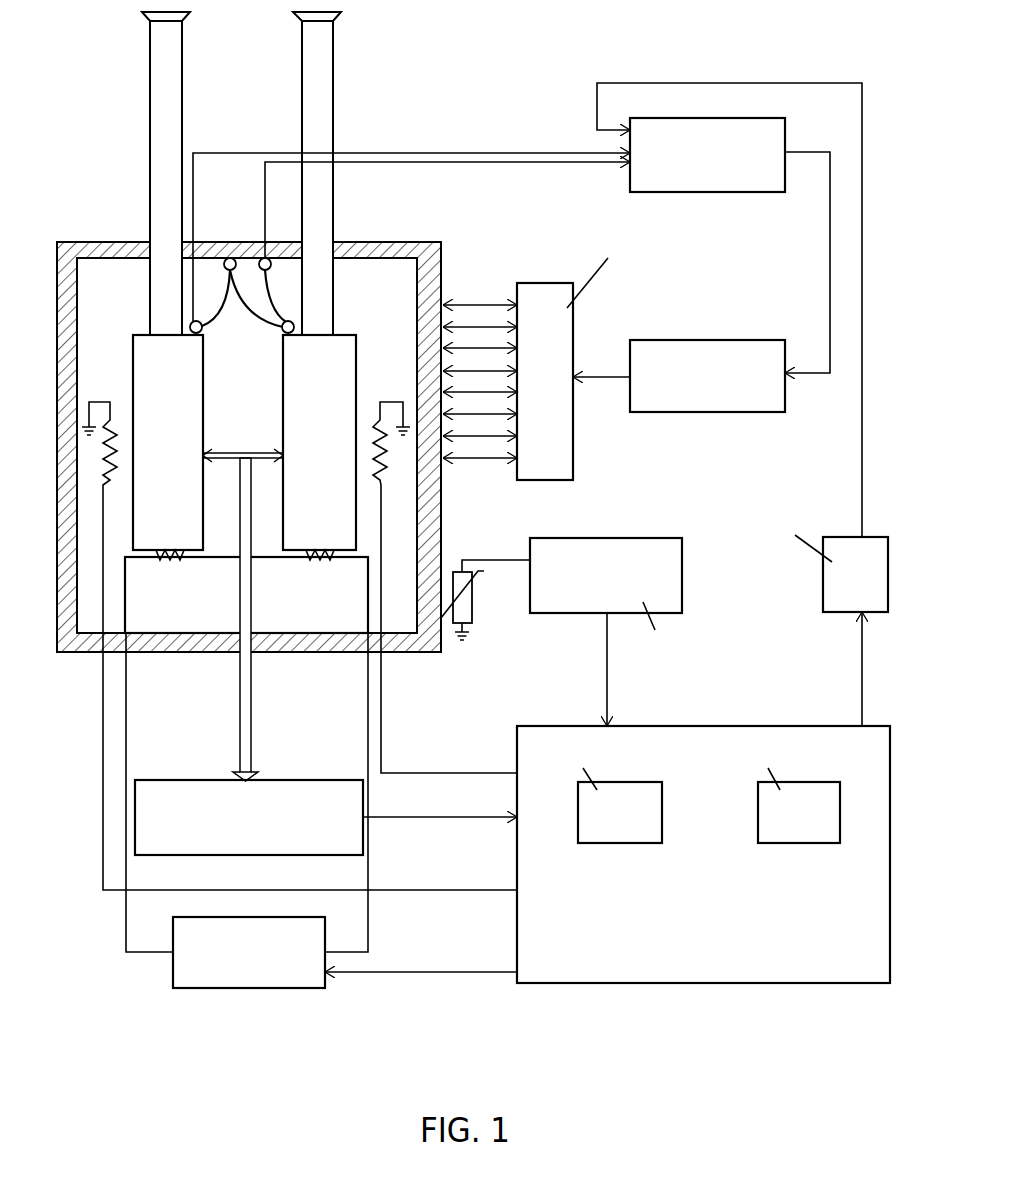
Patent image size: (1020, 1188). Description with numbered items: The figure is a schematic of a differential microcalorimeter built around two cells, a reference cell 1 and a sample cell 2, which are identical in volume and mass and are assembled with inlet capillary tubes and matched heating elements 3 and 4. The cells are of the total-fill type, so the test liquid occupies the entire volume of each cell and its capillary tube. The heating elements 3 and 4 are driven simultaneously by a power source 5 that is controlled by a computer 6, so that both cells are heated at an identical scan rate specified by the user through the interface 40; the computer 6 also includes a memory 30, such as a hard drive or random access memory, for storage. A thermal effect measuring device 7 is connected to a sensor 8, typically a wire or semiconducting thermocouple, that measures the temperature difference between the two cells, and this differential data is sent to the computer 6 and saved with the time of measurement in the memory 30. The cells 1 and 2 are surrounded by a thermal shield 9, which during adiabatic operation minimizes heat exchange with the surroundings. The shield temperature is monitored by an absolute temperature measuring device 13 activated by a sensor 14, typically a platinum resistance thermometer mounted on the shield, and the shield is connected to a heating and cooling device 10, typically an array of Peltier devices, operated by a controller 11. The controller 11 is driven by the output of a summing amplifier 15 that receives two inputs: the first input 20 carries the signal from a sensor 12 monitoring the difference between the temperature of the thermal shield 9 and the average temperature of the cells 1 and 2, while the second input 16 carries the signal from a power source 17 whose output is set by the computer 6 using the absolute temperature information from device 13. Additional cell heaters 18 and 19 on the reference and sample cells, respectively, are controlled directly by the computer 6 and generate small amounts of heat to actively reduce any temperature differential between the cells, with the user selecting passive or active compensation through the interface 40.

The reference cell 1 is at (174, 463).
The sample cell 2 is at (326, 463).
The heating element 3 is at (172, 559).
The heating element 4 is at (322, 559).
The power source 5 is at (210, 989).
The computer 6 is at (703, 854).
The thermal effect measuring device 7 is at (189, 780).
The sensor 8 is at (233, 450).
The thermal shield 9 is at (107, 241).
The heating and cooling device 10 is at (560, 397).
The controller 11 is at (720, 408).
The sensor 12 is at (213, 307).
The absolute temperature measuring device 13 is at (615, 589).
The sensor 14 is at (513, 558).
The summing amplifier 15 is at (765, 185).
The second input 16 is at (597, 113).
The power source 17 is at (874, 592).
The cell heater 18 is at (86, 424).
The cell heater 19 is at (400, 421).
The first input 20 is at (518, 152).
The memory 30 is at (633, 829).
The interface 40 is at (818, 829).